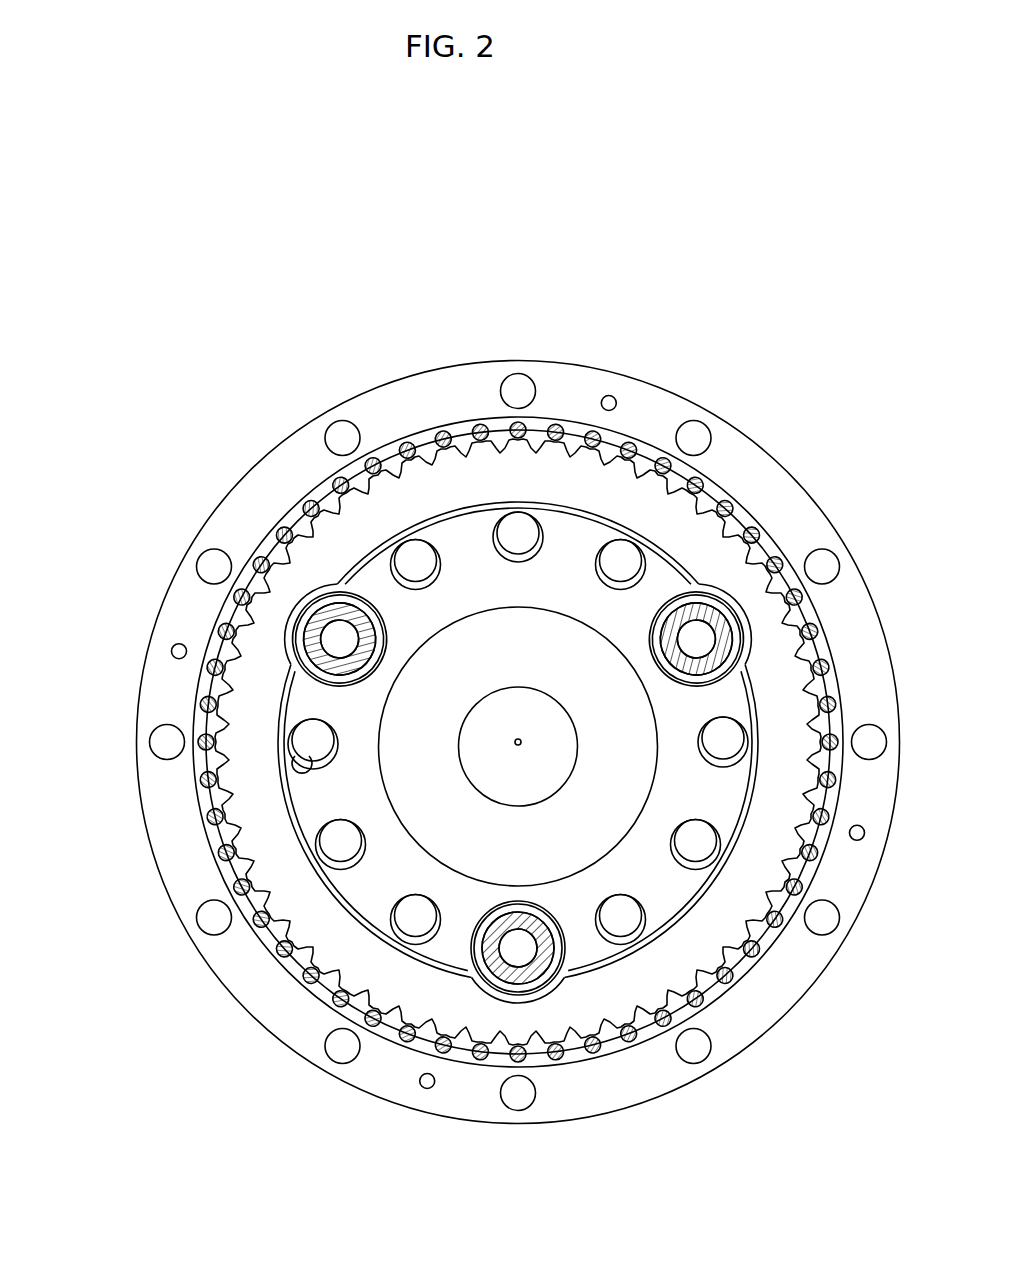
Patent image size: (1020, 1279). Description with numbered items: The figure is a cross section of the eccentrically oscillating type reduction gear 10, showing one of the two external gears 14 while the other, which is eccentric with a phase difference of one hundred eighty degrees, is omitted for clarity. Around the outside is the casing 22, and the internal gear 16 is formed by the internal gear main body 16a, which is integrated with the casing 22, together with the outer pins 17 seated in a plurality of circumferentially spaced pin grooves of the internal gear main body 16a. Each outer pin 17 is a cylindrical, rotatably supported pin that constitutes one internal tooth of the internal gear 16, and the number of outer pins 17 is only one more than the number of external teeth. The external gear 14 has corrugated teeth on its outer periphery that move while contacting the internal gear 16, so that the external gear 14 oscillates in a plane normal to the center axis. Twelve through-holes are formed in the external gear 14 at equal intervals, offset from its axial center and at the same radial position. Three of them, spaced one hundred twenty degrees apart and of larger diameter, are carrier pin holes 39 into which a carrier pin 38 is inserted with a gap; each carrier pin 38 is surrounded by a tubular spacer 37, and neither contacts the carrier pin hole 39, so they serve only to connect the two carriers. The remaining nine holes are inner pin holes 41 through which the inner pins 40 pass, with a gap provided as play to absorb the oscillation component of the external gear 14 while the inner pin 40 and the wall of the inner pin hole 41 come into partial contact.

The eccentrically oscillating type reduction gear 10 is at (793, 398).
The external gear 14 is at (648, 498).
The internal gear 16 is at (545, 306).
The internal gear main body 16a is at (457, 427).
The outer pin 17 is at (557, 423).
The casing 22 is at (392, 420).
The spacer 37 is at (495, 972).
The carrier pin 38 is at (522, 957).
The carrier pin hole 39 is at (552, 972).
The inner pin 40 is at (307, 741).
The inner pin hole 41 is at (288, 758).